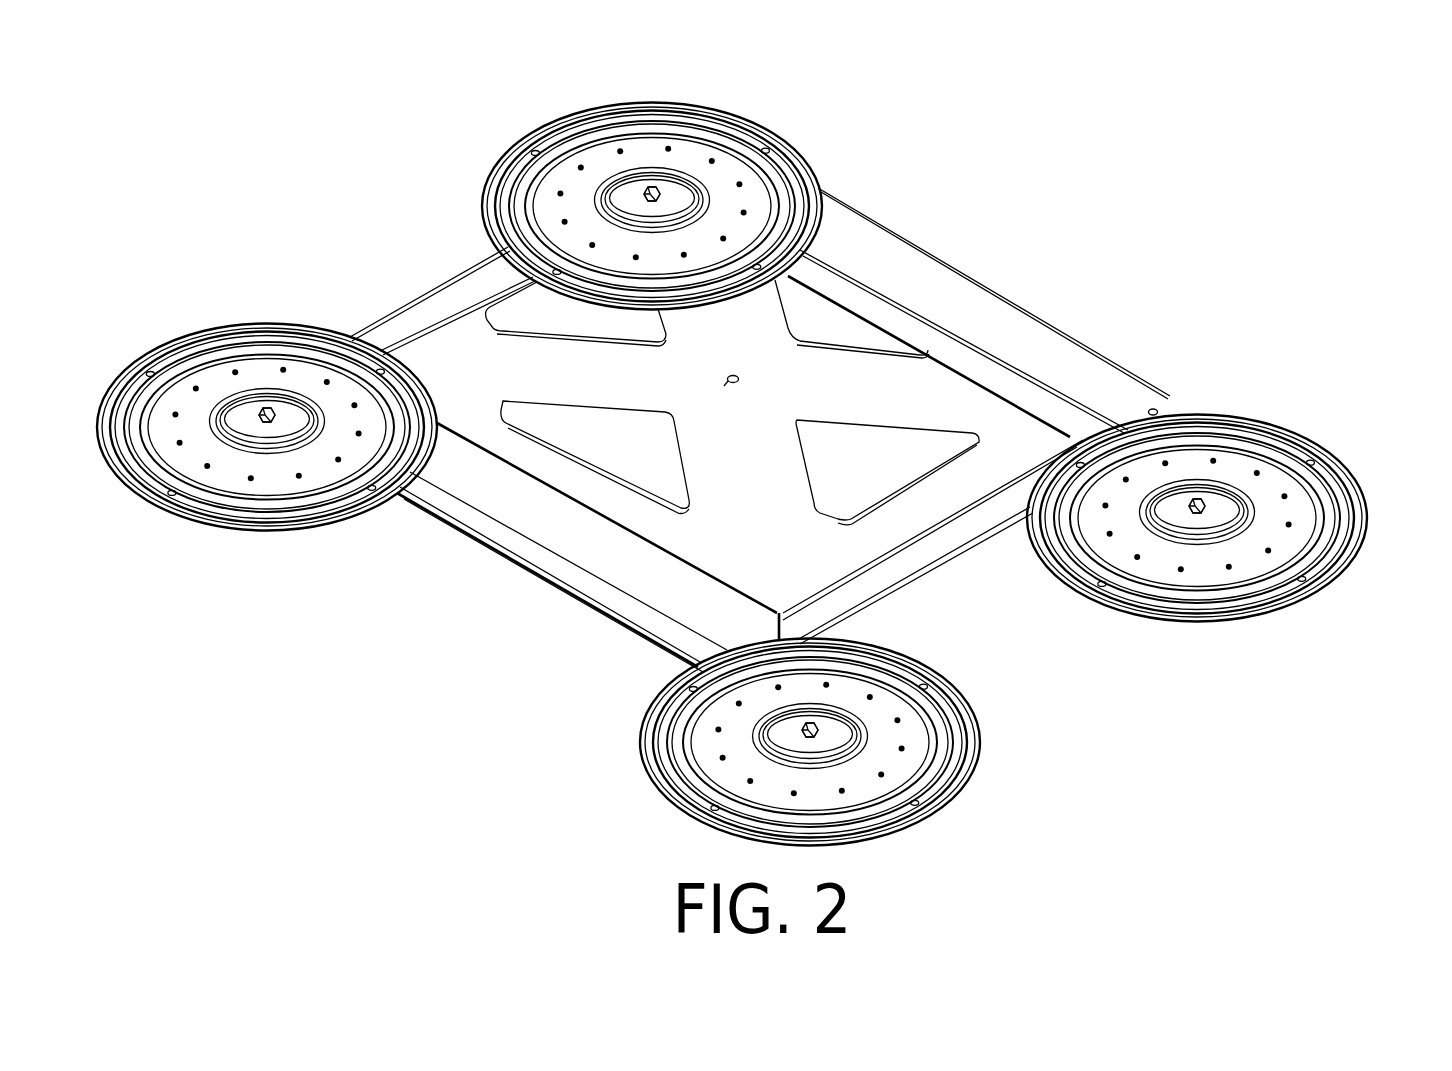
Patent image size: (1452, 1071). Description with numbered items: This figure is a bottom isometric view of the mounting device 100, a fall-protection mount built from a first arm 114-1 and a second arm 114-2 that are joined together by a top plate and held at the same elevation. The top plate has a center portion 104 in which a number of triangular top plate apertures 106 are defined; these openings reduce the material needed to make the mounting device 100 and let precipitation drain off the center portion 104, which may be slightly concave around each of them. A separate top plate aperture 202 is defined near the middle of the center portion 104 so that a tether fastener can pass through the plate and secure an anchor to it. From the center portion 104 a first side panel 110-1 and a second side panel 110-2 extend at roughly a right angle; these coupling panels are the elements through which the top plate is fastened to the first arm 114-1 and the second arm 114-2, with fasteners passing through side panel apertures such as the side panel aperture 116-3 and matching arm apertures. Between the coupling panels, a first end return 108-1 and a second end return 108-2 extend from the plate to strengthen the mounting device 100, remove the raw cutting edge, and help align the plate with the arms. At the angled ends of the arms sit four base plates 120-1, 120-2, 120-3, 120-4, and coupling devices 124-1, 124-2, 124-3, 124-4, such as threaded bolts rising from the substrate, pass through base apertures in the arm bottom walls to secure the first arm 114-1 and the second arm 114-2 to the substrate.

The mounting device 100 is at (152, 86).
The center portion 104 is at (478, 360).
The top plate apertures 106 is at (637, 458).
The first end return 108-1 is at (392, 332).
The second end return 108-2 is at (973, 520).
The first side panel 110-1 is at (1013, 332).
The second side panel 110-2 is at (483, 550).
The first arm 114-1 is at (477, 473).
The second arm 114-2 is at (902, 327).
The side panel aperture 116-3 is at (1163, 407).
The first base plate 120-1 is at (253, 347).
The second base plate 120-2 is at (955, 757).
The third base plate 120-3 is at (1277, 452).
The fourth base plate 120-4 is at (510, 192).
The coupling device 124-1 is at (263, 427).
The coupling device 124-2 is at (803, 733).
The coupling device 124-3 is at (1200, 512).
The coupling device 124-4 is at (660, 197).
The top plate aperture 202 is at (728, 380).